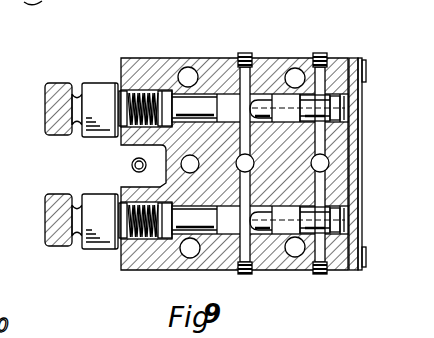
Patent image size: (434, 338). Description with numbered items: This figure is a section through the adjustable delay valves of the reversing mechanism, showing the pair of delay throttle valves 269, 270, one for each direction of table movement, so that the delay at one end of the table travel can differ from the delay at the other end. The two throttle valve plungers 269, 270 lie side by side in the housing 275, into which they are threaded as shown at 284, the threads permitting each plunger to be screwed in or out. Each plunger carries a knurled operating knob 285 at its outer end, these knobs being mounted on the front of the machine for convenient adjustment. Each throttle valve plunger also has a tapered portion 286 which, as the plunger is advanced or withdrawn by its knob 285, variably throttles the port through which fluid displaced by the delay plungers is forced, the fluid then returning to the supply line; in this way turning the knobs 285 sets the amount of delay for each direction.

The housing 275 is at (274, 62).
The delay throttle valve 269 is at (335, 98).
The delay throttle valve 270 is at (287, 230).
The threaded portion 284 is at (146, 92).
The knurled operating knob 285 is at (58, 88).
The tapered portion 286 is at (301, 93).